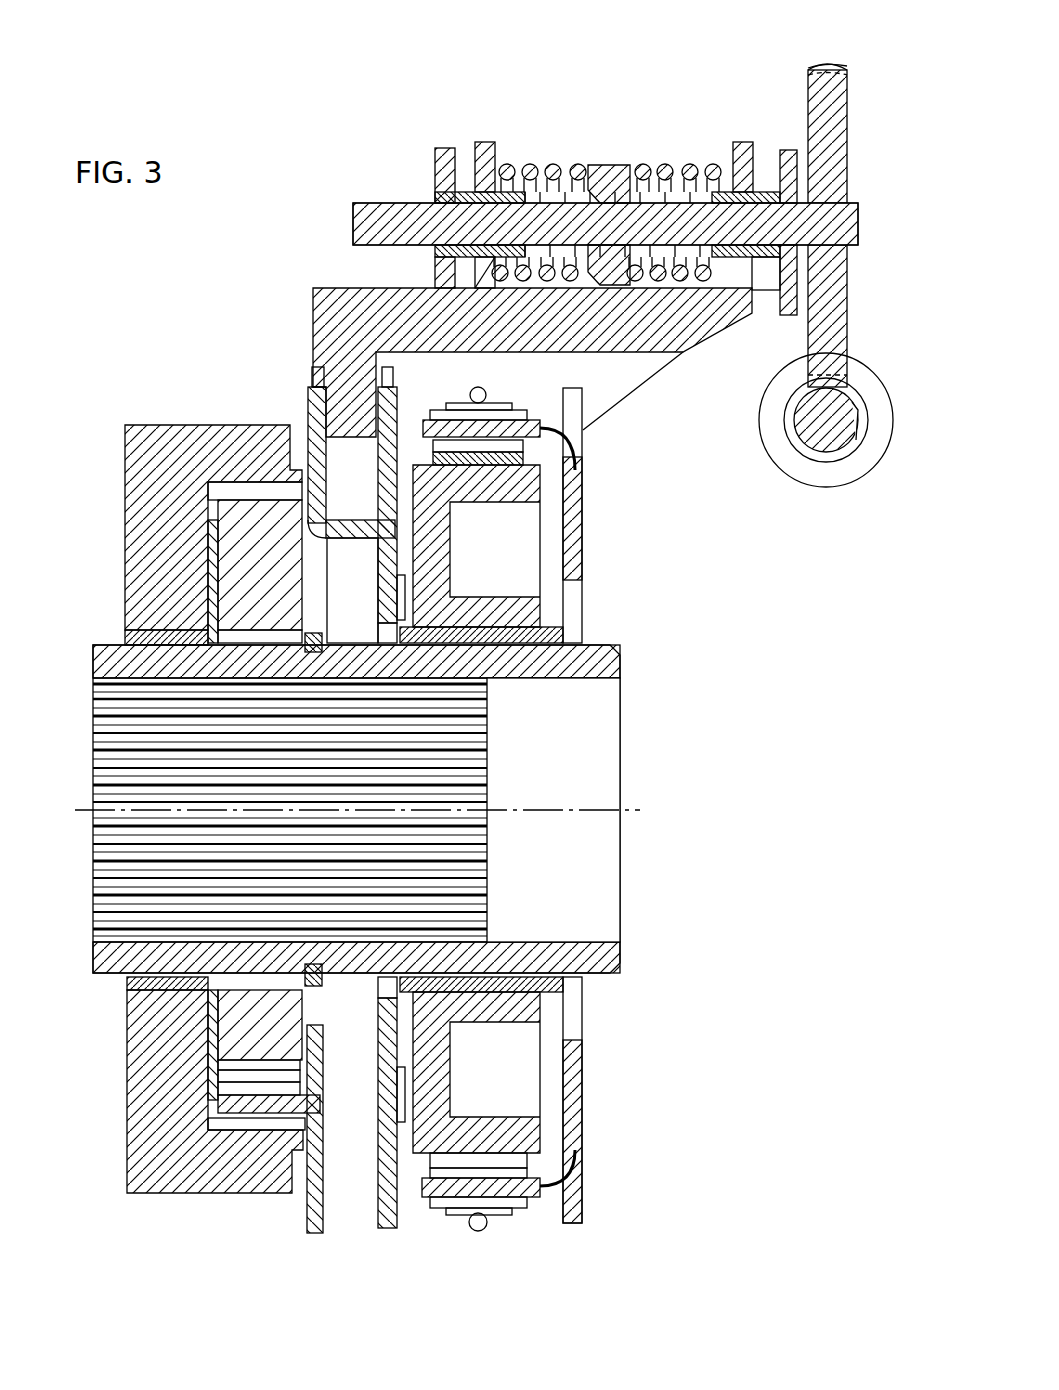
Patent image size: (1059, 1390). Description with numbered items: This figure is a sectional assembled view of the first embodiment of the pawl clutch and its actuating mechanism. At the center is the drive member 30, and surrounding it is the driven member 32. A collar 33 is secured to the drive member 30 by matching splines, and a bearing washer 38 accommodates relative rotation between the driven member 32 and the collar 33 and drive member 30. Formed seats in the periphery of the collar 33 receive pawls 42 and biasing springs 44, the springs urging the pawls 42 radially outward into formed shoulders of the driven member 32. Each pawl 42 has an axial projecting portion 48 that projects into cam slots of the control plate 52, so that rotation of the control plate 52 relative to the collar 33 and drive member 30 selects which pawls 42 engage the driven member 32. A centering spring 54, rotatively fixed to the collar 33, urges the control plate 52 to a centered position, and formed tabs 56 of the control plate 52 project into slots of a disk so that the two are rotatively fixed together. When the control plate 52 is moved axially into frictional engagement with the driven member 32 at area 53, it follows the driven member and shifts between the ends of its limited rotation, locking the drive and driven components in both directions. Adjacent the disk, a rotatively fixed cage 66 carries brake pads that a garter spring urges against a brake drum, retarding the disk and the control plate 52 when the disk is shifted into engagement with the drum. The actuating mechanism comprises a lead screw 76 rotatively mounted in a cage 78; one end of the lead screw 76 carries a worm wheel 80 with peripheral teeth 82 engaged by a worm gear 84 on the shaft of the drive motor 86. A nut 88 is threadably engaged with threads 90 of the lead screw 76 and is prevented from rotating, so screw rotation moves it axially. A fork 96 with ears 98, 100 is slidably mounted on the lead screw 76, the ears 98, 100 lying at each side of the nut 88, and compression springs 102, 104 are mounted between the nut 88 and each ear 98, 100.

The drive member 30 is at (100, 655).
The driven member 32 is at (135, 460).
The collar 33 is at (258, 520).
The bearing washer 38 is at (206, 560).
The pawls 42 is at (228, 1110).
The biasing springs 44 is at (200, 1050).
The axial projecting portion 48 is at (300, 1110).
The control plate 52 is at (316, 1195).
The area 53 is at (300, 462).
The centering spring 54 is at (303, 975).
The tabs 56 is at (350, 520).
The cage 66 is at (840, 330).
The lead screw 76 is at (375, 215).
The cage 78 is at (445, 160).
The worm wheel 80 is at (836, 122).
The peripheral teeth 82 is at (822, 70).
The worm gear 84 is at (815, 428).
The drive motor 86 is at (868, 480).
The nut 88 is at (615, 175).
The threads 90 is at (545, 195).
The fork 96 is at (345, 300).
The ear 98 is at (485, 165).
The ear 100 is at (743, 160).
The compression spring 102 is at (578, 165).
The compression spring 104 is at (665, 165).